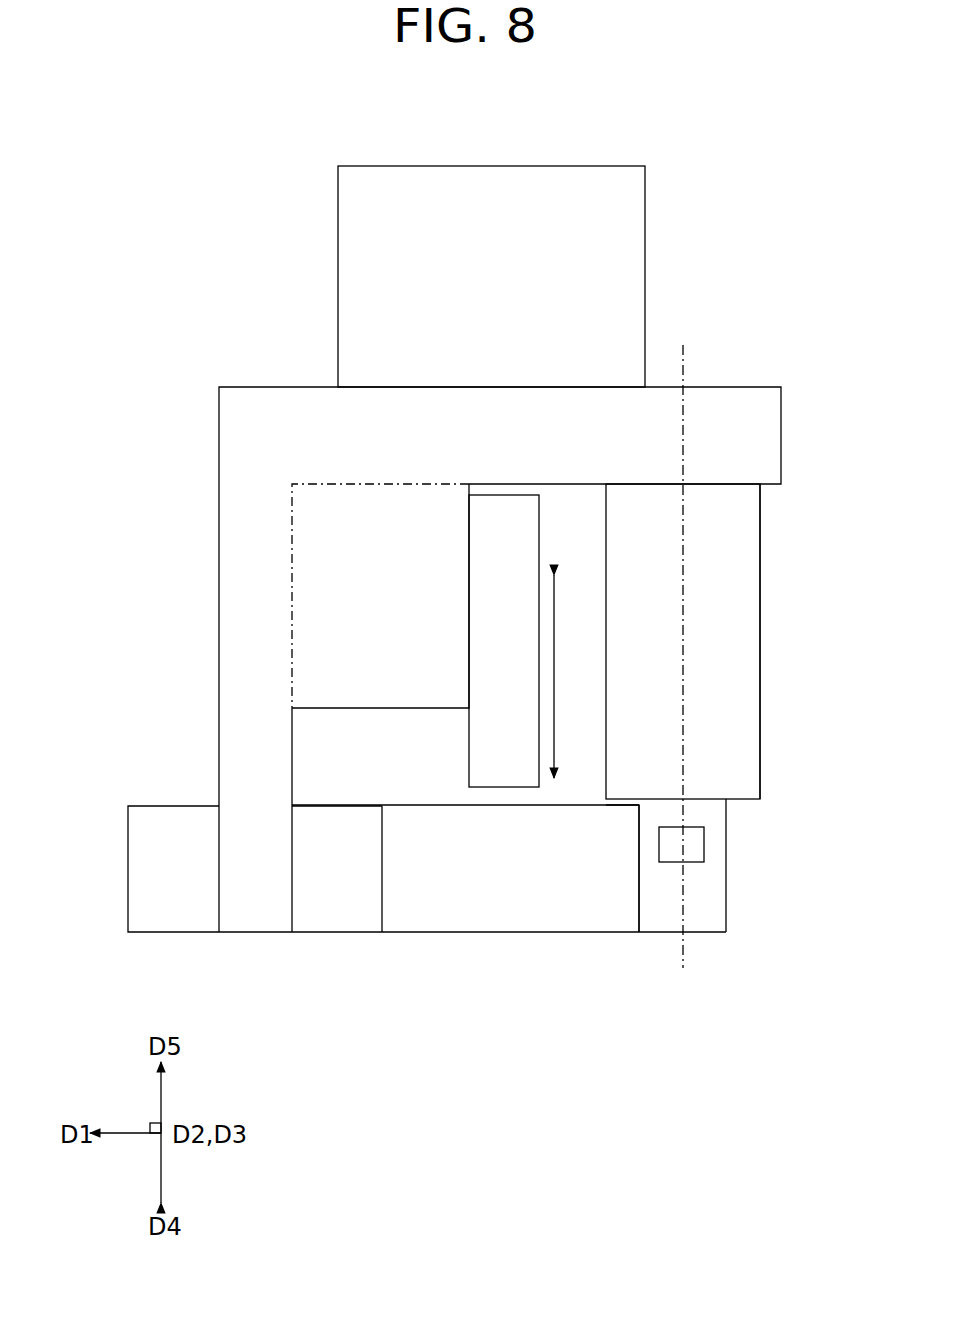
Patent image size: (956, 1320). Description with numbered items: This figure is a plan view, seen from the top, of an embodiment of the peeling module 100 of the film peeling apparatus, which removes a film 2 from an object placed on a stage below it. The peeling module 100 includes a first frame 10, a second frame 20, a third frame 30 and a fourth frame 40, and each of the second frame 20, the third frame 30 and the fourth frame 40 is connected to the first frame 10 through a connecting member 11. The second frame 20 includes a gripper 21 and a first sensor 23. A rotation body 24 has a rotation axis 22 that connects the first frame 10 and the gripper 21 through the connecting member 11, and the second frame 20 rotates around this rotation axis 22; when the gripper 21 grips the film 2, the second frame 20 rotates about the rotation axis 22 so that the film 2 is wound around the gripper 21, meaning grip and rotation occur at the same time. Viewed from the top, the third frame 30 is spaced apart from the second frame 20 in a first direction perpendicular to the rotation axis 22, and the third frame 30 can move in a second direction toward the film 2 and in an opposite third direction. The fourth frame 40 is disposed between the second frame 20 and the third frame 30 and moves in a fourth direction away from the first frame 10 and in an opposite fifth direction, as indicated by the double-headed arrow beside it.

The peeling module 100 is at (89, 204).
The first frame 10 is at (491, 276).
The connecting member 11 is at (225, 413).
The second frame 20 is at (721, 690).
The gripper 21 is at (714, 898).
The rotation axis 22 is at (686, 643).
The first sensor 23 is at (705, 842).
The rotation body 24 is at (750, 545).
The third frame 30 is at (328, 962).
The fourth frame 40 is at (447, 765).
The film 2 is at (514, 920).